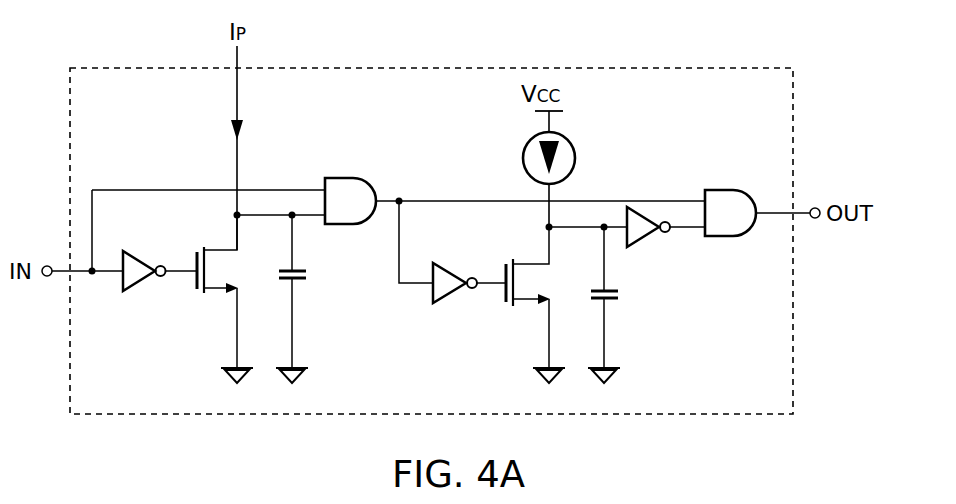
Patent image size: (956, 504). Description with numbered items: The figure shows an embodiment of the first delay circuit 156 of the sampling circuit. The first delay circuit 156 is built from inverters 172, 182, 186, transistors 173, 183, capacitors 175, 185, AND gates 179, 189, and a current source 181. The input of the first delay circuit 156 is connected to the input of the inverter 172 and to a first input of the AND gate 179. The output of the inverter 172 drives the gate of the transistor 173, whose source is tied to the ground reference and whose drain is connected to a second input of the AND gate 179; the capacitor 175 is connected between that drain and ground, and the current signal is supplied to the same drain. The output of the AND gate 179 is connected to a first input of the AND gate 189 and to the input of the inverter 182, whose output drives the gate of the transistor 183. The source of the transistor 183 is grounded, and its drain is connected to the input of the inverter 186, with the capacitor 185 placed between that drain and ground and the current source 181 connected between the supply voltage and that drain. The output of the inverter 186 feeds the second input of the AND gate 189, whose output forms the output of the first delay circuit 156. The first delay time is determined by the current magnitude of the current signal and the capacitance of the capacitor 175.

The first delay circuit 156 is at (733, 68).
The inverter 172 is at (141, 293).
The transistor 173 is at (215, 299).
The capacitor 175 is at (308, 274).
The AND gate 179 is at (343, 178).
The current source 181 is at (576, 160).
The inverter 182 is at (451, 305).
The transistor 183 is at (523, 309).
The capacitor 185 is at (620, 293).
The inverter 186 is at (647, 248).
The AND gate 189 is at (725, 190).